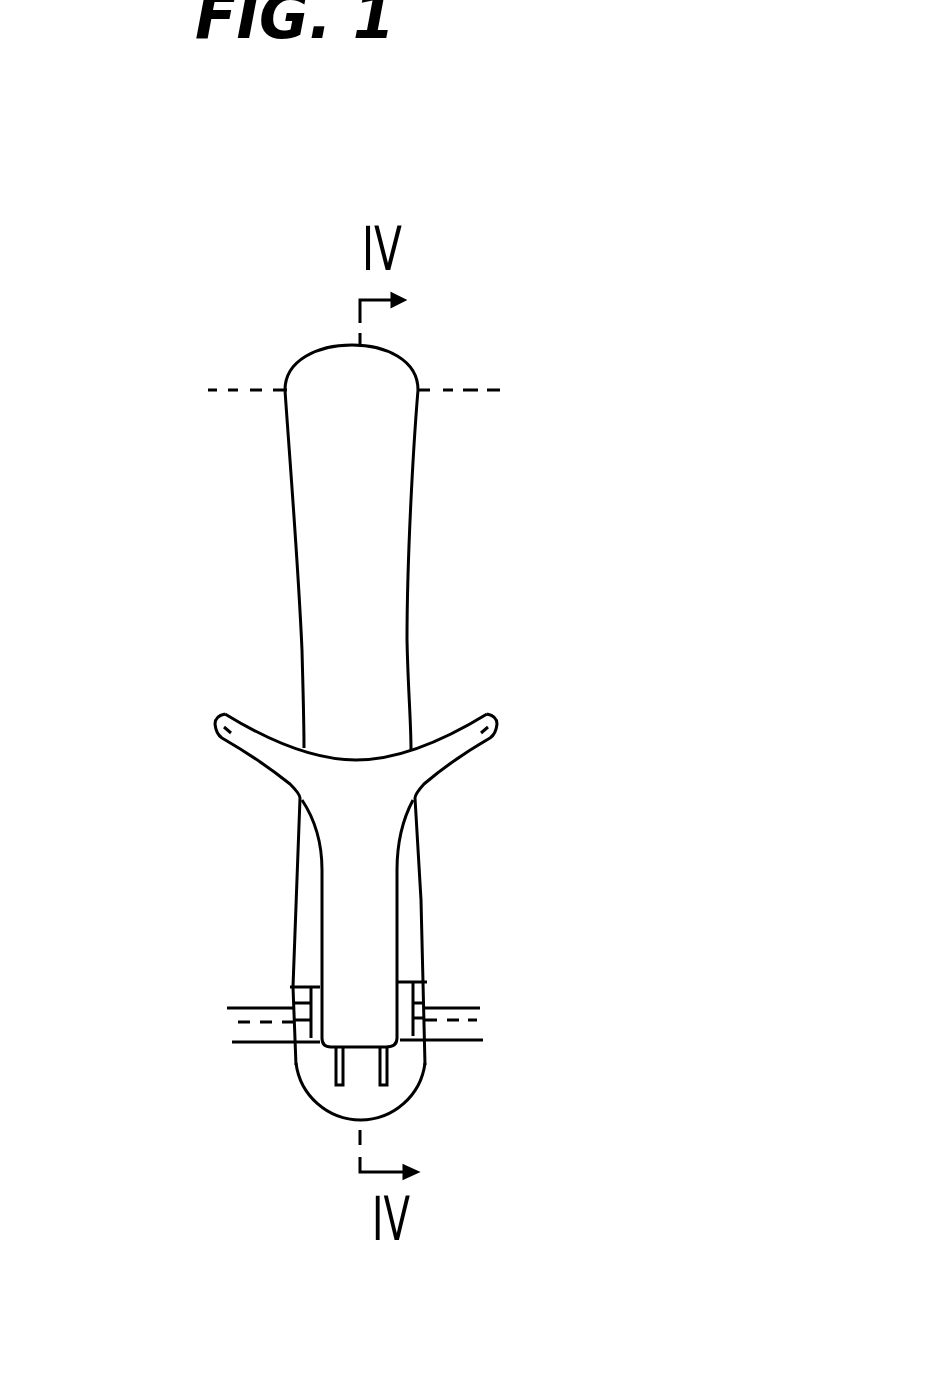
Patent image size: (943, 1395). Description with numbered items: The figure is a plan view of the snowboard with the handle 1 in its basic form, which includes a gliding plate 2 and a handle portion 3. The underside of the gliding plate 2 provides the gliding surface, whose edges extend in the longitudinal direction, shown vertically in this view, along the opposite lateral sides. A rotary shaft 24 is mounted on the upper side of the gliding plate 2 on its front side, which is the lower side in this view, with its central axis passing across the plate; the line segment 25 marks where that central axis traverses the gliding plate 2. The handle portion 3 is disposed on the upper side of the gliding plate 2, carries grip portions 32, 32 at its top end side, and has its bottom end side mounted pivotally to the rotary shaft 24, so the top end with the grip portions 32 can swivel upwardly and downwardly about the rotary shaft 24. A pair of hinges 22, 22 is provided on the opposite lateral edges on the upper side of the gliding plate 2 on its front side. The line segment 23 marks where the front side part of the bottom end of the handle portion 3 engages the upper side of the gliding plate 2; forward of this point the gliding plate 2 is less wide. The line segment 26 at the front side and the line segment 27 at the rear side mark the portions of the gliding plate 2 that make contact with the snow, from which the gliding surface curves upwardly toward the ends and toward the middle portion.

The snowboard with the handle 1 is at (300, 608).
The gliding plate 2 is at (365, 548).
The handle portion 3 is at (365, 879).
The hinges 22 is at (312, 990).
The line segment 23 is at (270, 1042).
The rotary shaft 24 is at (293, 997).
The line segment 25 is at (240, 1006).
The line segment 26 is at (238, 1022).
The line segment 27 is at (462, 392).
The grip portions 32 is at (221, 738).